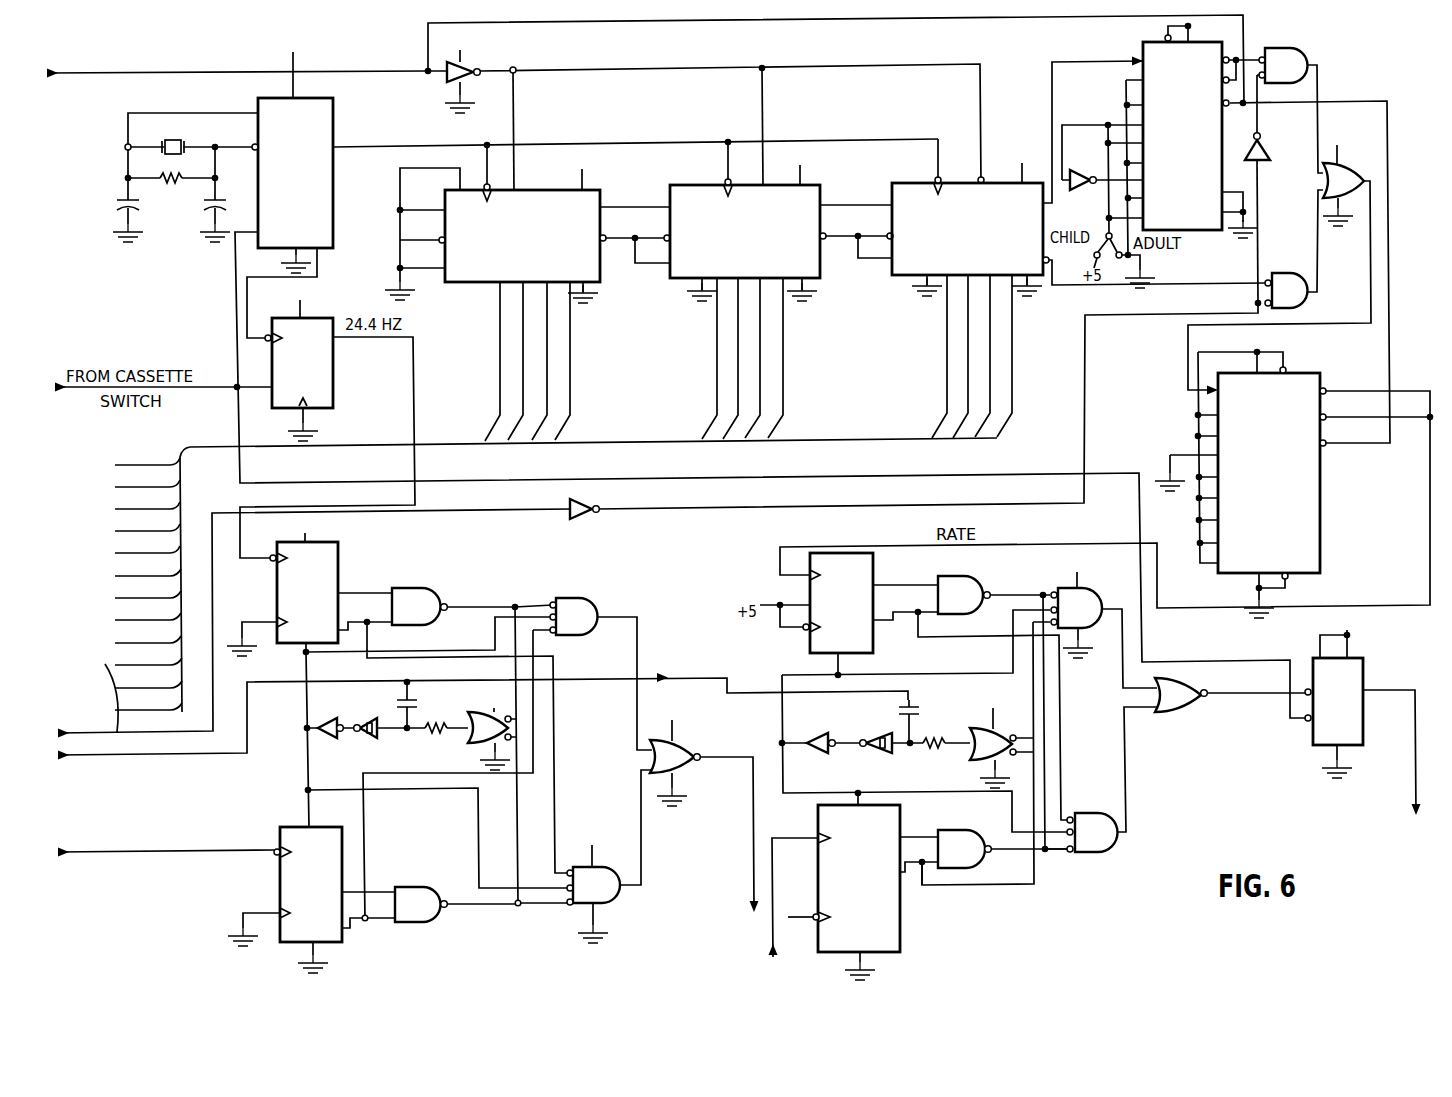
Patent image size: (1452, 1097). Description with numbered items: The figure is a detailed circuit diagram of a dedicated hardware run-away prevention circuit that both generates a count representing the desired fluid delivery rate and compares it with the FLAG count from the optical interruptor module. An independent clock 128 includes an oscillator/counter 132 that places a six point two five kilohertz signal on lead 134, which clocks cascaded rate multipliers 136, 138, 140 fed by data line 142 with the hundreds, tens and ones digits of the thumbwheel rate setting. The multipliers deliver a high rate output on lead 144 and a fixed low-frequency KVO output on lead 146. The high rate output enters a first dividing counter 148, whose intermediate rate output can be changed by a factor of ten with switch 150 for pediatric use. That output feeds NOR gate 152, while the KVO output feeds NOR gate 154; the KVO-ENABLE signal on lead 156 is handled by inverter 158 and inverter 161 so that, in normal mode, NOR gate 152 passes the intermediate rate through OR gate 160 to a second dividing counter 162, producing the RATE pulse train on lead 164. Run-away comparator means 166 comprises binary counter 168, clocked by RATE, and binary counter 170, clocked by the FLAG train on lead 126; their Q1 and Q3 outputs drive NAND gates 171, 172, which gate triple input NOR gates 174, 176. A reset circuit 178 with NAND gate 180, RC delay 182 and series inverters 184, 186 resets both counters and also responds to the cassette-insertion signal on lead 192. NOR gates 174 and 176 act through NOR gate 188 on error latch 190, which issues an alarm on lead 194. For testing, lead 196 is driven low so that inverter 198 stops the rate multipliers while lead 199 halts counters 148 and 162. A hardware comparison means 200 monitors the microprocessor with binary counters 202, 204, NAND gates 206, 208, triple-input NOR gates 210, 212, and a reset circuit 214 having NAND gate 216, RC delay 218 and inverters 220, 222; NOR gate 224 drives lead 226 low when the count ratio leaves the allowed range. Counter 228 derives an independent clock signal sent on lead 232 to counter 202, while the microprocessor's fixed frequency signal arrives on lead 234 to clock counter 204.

The lead 126 is at (790, 842).
The independent clock 128 is at (173, 213).
The oscillator/counter 132 is at (334, 231).
The lead 134 is at (352, 155).
The rate multiplier 136 is at (600, 282).
The rate multiplier 138 is at (822, 280).
The rate multiplier 140 is at (892, 278).
The data line 142 is at (187, 451).
The lead 144 is at (1048, 51).
The lead 146 is at (1168, 286).
The first dividing counter 148 is at (1200, 232).
The switch 150 is at (1098, 227).
The NOR gate 152 is at (1308, 52).
The NOR gate 154 is at (1311, 302).
The lead 156 is at (88, 694).
The inverter 158 is at (576, 519).
The OR gate 160 is at (1352, 171).
The inverter 161 is at (1280, 153).
The second dividing counter 162 is at (1240, 577).
The lead 164 is at (1430, 553).
The run-away comparator means 166 is at (731, 590).
The binary counter 168 is at (874, 559).
The binary counter 170 is at (818, 933).
The NAND gate 171 is at (970, 584).
The NAND gate 172 is at (972, 830).
The triple input NOR gate 174 is at (1093, 588).
The triple input NOR gate 176 is at (1093, 803).
The reset circuit 178 is at (876, 743).
The NAND gate 180 is at (969, 748).
The RC delay 182 is at (921, 733).
The inverter 184 is at (872, 752).
The inverter 186 is at (808, 755).
The NOR gate 188 is at (1167, 712).
The error latch 190 is at (1364, 724).
The lead 192 is at (205, 758).
The lead 194 is at (1414, 778).
The lead 196 is at (115, 76).
The inverter 198 is at (476, 58).
The lead 199 is at (717, 22).
The hardware comparison means 200 is at (636, 594).
The binary counter 202 is at (333, 542).
The binary counter 204 is at (341, 942).
The NAND gate 206 is at (430, 590).
The NAND gate 208 is at (418, 887).
The triple-input NOR gate 210 is at (573, 598).
The triple-input NOR gate 212 is at (609, 905).
The reset circuit 214 is at (412, 724).
The NAND gate 216 is at (467, 733).
The RC delay 218 is at (421, 721).
The inverter 220 is at (371, 742).
The inverter 222 is at (326, 742).
The NOR gate 224 is at (690, 774).
The lead 226 is at (735, 754).
The counter 228 is at (334, 390).
The lead 232 is at (412, 462).
The lead 234 is at (257, 847).